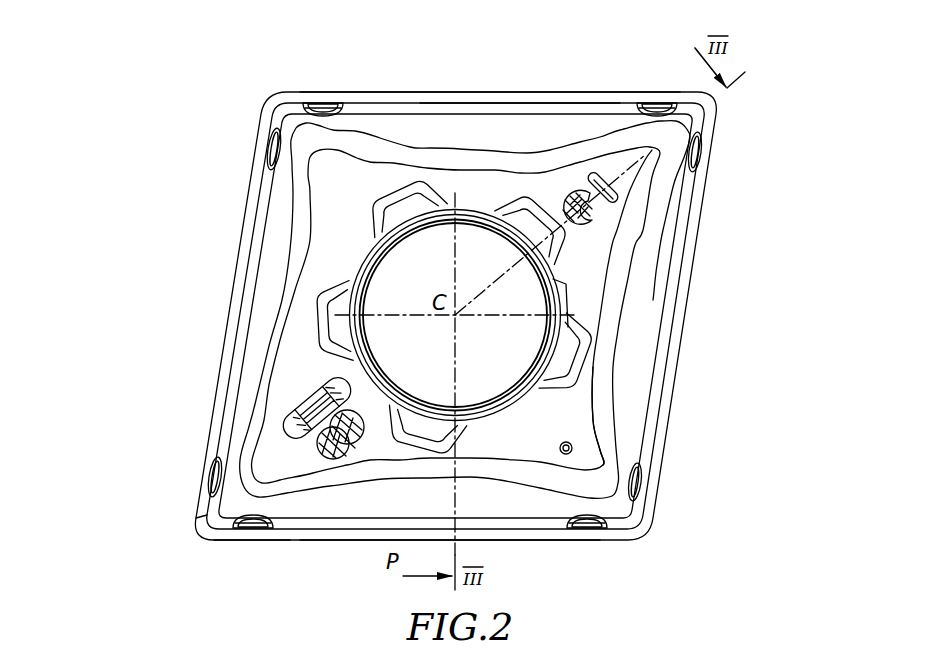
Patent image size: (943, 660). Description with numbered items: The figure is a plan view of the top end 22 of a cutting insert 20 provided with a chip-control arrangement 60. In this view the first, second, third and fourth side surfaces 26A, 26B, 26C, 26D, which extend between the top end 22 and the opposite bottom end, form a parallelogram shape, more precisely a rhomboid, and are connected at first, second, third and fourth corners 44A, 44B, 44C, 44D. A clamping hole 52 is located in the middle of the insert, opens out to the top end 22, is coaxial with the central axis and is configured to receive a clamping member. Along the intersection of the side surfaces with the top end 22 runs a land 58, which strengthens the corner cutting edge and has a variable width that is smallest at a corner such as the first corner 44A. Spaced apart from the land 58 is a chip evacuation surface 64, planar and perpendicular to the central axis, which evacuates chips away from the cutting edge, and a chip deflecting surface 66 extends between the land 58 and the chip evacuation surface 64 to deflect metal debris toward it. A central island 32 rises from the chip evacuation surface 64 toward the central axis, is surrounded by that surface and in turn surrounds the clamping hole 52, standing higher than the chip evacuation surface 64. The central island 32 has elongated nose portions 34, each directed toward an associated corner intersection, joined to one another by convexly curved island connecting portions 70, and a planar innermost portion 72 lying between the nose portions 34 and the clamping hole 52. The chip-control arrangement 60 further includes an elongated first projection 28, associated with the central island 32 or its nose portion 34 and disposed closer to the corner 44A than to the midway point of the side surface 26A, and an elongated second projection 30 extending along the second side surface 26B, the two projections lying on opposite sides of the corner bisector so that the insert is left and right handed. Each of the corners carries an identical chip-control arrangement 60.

The cutting insert 20 is at (148, 97).
The top end 22 is at (530, 130).
The first side surface 26A is at (583, 540).
The second side surface 26B is at (218, 380).
The third side surface 26C is at (383, 90).
The fourth side surface 26D is at (715, 151).
The first projection 28 is at (253, 527).
The second projection 30 is at (215, 473).
The central island 32 is at (615, 383).
The elongated nose portion 34 is at (637, 130).
The first corner 44A is at (177, 540).
The second corner 44B is at (260, 91).
The third corner 44C is at (727, 104).
The fourth corner 44D is at (647, 544).
The clamping hole 52 is at (520, 292).
The land 58 is at (687, 267).
The chip-control arrangement 60 is at (177, 496).
The chip evacuation surface 64 is at (638, 353).
The chip deflecting surface 66 is at (665, 317).
The island connecting portion 70 is at (603, 453).
The innermost portion 72 is at (343, 185).